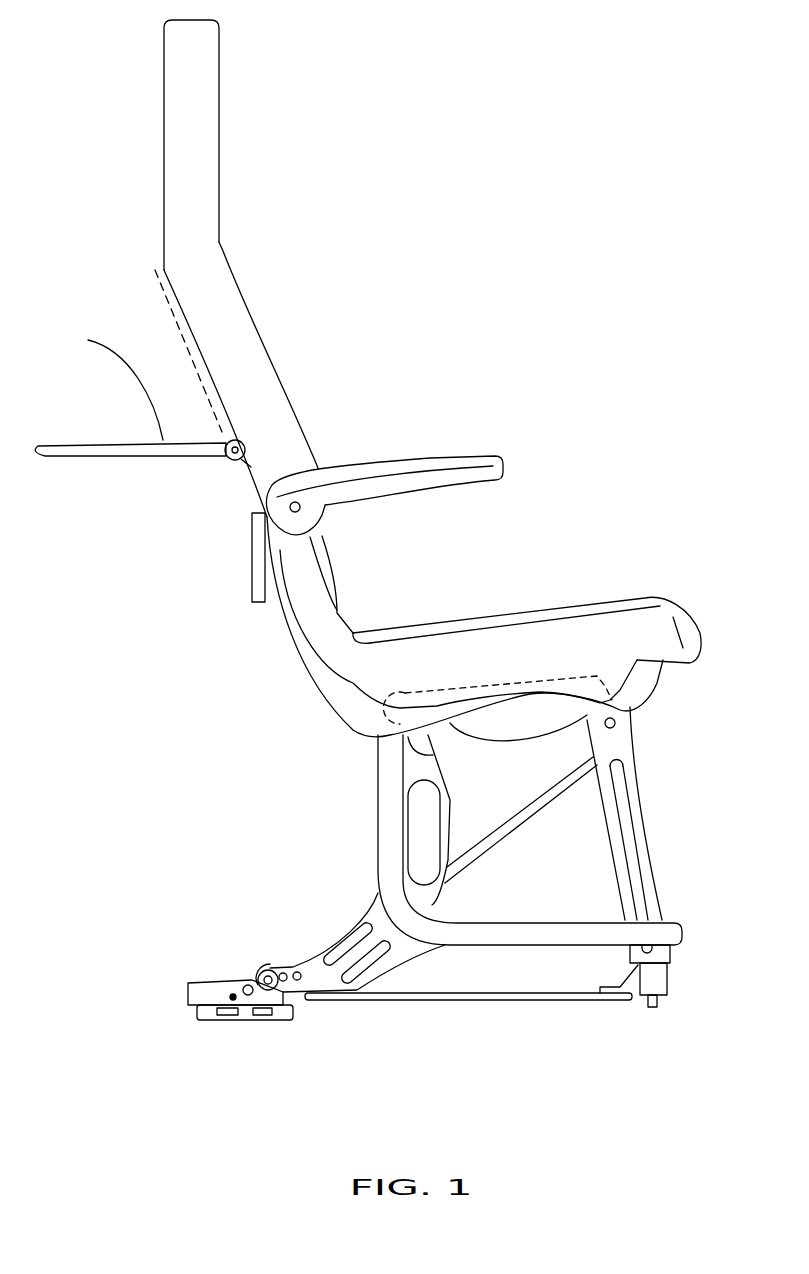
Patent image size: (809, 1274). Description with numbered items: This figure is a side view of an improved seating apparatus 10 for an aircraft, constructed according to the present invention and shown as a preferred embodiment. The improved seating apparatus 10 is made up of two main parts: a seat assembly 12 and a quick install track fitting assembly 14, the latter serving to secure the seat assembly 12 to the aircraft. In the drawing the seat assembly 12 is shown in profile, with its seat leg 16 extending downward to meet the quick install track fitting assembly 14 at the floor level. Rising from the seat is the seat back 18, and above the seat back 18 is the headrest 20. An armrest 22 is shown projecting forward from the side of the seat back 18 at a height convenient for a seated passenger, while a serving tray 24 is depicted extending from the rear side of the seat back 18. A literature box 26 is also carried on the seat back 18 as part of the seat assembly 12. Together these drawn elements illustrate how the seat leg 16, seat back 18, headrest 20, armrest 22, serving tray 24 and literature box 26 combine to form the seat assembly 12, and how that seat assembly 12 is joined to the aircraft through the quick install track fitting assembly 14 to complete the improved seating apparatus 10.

The improved seating apparatus 10 is at (614, 153).
The seat assembly 12 is at (258, 705).
The quick install track fitting assembly 14 is at (225, 982).
The seat leg 16 is at (375, 917).
The seat back 18 is at (293, 402).
The headrest 20 is at (220, 107).
The armrest 22 is at (502, 473).
The serving tray 24 is at (168, 305).
The literature box 26 is at (253, 547).